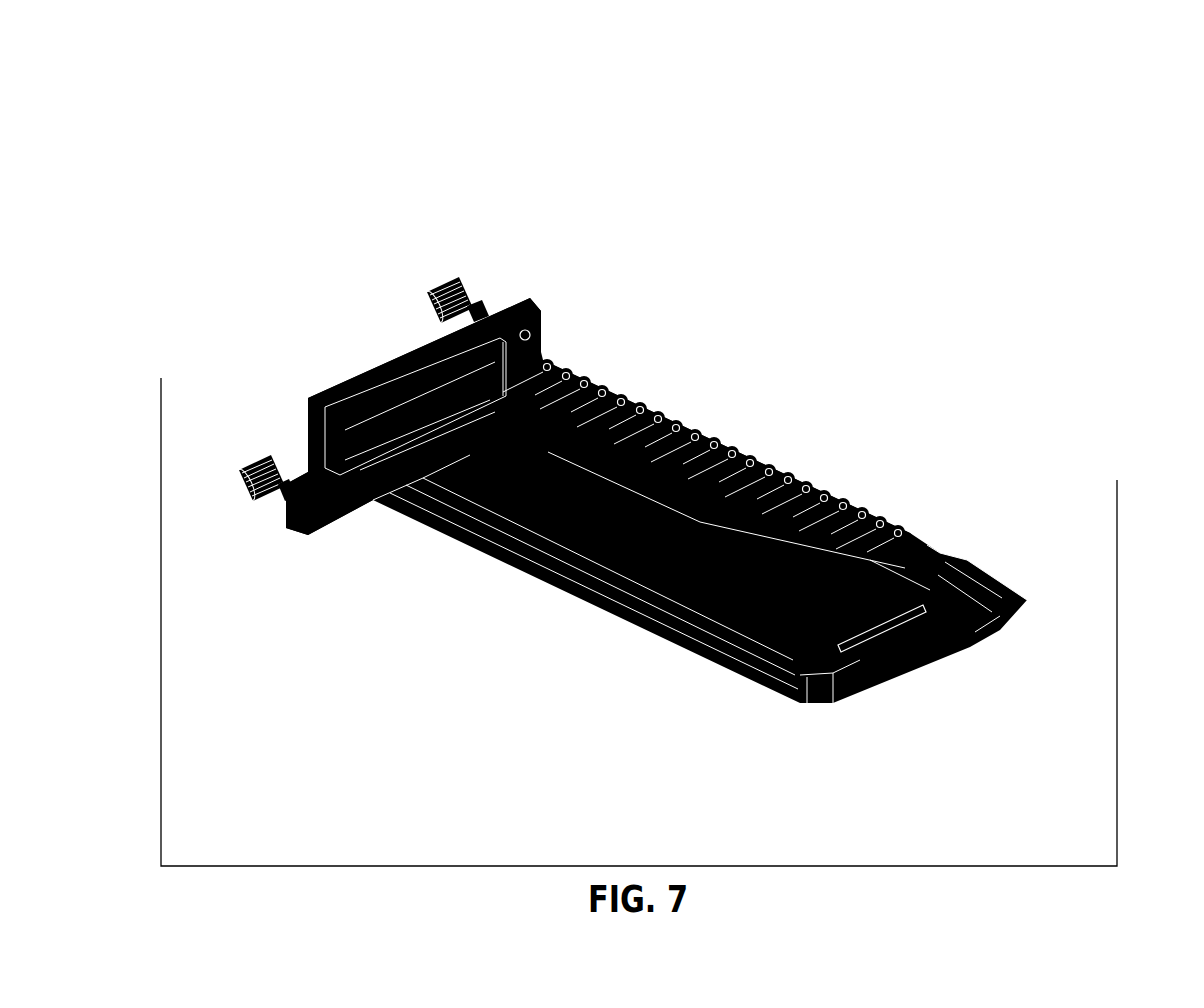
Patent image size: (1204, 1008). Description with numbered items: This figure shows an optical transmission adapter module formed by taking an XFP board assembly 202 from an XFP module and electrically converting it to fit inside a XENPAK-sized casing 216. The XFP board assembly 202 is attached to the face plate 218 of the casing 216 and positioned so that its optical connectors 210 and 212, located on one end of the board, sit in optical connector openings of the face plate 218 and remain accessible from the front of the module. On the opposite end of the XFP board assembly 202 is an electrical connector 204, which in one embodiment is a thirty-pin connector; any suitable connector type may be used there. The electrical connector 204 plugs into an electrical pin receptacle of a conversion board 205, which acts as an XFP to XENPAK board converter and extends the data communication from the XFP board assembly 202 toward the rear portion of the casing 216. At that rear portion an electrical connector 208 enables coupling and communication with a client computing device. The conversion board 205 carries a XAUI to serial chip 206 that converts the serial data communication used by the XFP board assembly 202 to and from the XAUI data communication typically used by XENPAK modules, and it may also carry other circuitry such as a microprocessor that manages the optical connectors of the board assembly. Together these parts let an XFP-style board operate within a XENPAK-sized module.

The XFP board assembly 202 is at (553, 465).
The electrical connector 204 is at (680, 525).
The conversion board 205 is at (780, 537).
The XAUI to serial chip 206 is at (817, 595).
The electrical connector 208 is at (965, 645).
The optical connector 210 is at (514, 393).
The optical connector 212 is at (450, 475).
The XENPAK-sized casing 216 is at (397, 502).
The face plate 218 is at (488, 313).